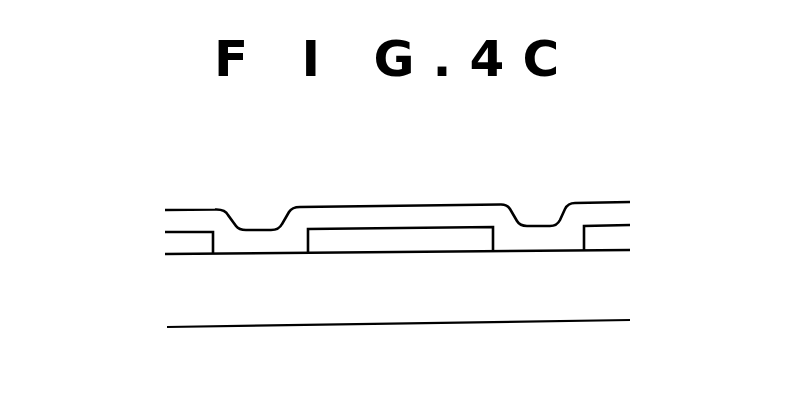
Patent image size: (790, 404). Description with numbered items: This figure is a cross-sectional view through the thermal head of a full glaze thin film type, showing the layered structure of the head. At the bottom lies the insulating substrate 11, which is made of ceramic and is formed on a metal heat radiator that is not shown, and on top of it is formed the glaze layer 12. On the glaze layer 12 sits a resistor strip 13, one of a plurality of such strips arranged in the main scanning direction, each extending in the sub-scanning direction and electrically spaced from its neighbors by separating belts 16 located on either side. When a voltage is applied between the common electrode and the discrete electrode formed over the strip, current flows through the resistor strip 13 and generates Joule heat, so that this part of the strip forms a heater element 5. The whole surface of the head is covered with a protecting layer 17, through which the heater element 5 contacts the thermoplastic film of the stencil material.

The heater element 5 is at (491, 190).
The insulating substrate 11 is at (398, 343).
The glaze layer 12 is at (397, 276).
The resistor strip 13 is at (421, 240).
The separating belt 16 is at (249, 245).
The protecting layer 17 is at (350, 218).